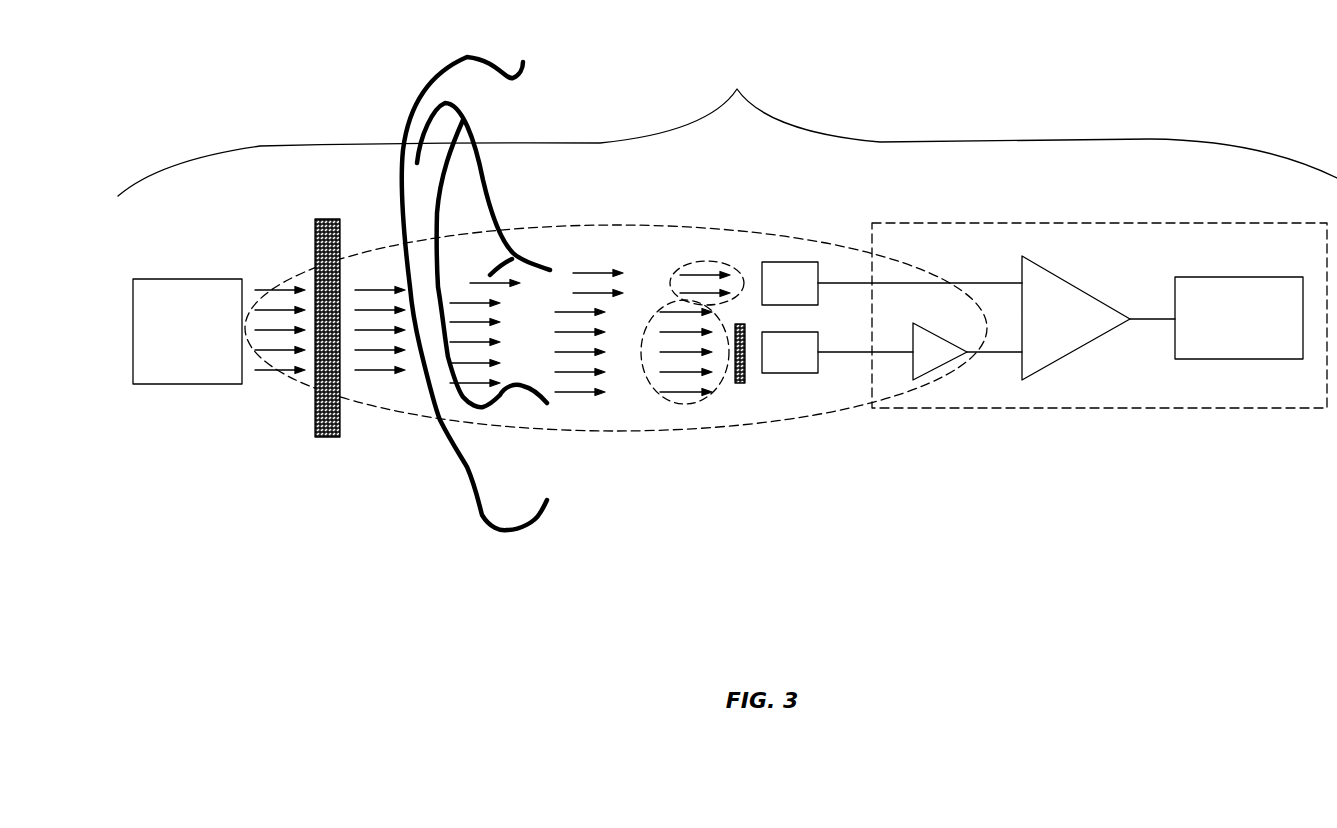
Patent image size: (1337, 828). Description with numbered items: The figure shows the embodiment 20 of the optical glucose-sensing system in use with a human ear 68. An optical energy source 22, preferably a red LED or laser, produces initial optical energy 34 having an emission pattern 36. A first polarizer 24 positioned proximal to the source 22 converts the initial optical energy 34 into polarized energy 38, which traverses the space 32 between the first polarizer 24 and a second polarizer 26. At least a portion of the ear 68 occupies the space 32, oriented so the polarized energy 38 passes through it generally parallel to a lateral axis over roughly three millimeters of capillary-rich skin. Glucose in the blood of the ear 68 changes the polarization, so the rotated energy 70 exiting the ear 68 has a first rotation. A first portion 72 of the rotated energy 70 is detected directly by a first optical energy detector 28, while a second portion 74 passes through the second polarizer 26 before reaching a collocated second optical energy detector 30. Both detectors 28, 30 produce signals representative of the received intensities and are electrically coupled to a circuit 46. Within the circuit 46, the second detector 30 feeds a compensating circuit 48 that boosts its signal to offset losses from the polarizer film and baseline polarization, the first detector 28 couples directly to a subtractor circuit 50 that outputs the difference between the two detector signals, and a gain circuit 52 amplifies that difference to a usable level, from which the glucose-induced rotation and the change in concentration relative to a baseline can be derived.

The embodiment 20 is at (727, 128).
The optical energy source 22 is at (187, 331).
The first polarizer 24 is at (315, 232).
The second polarizer 26 is at (745, 385).
The first optical energy detector 28 is at (892, 283).
The second optical energy detector 30 is at (837, 352).
The space 32 is at (638, 548).
The initial optical energy 34 is at (262, 310).
The emission pattern 36 is at (565, 247).
The polarized energy 38 is at (390, 290).
The circuit 46 is at (1112, 237).
The compensating circuit 48 is at (967, 351).
The subtractor circuit 50 is at (1098, 318).
The gain circuit 52 is at (1239, 318).
The human ear 68 is at (508, 528).
The rotated energy 70 is at (710, 272).
The first portion of rotated energy 72 is at (718, 260).
The second portion of rotated energy 74 is at (685, 403).